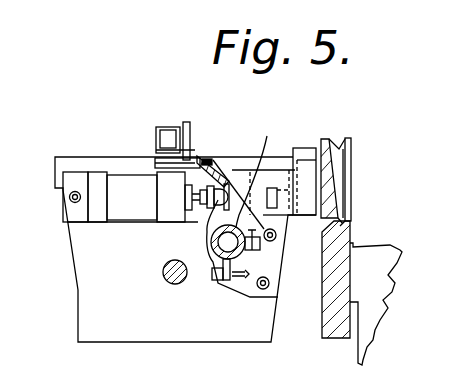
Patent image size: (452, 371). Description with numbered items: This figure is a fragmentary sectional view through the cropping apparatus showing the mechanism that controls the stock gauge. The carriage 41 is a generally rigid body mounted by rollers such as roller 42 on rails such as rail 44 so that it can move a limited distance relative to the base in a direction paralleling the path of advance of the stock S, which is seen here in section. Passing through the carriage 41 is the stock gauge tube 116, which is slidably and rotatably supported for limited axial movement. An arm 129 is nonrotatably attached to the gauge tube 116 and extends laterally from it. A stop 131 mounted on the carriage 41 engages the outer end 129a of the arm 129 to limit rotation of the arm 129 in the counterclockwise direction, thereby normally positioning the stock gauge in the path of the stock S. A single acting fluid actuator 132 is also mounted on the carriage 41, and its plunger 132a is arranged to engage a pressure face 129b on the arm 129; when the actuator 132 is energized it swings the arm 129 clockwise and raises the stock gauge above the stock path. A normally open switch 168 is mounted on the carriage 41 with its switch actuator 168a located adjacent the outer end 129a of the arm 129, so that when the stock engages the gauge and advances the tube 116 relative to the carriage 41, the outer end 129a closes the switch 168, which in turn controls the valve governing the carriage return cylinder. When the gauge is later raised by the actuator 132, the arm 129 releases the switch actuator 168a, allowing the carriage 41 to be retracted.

The carriage 41 is at (68, 251).
The roller 42 is at (337, 142).
The rail 44 is at (336, 245).
The stock gauge tube 116 is at (215, 260).
The arm 129 is at (260, 213).
The outer end of the arm 129a is at (205, 157).
The pressure face 129b is at (229, 158).
The stop 131 is at (172, 165).
The single acting fluid actuator 132 is at (125, 208).
The plunger 132a is at (210, 214).
The switch 168 is at (156, 128).
The switch actuator 168a is at (192, 156).
The stock S is at (165, 282).